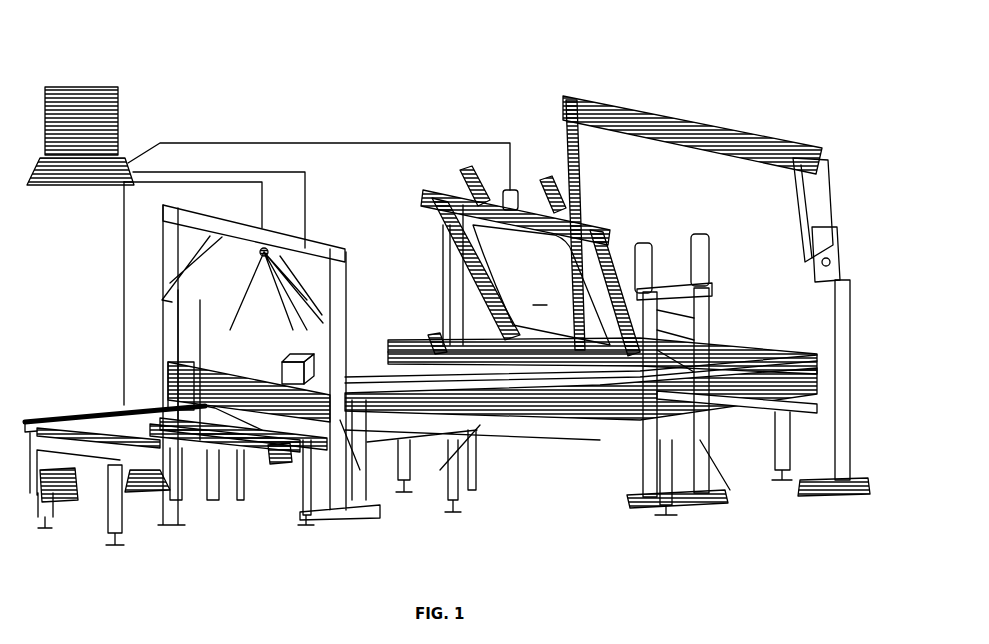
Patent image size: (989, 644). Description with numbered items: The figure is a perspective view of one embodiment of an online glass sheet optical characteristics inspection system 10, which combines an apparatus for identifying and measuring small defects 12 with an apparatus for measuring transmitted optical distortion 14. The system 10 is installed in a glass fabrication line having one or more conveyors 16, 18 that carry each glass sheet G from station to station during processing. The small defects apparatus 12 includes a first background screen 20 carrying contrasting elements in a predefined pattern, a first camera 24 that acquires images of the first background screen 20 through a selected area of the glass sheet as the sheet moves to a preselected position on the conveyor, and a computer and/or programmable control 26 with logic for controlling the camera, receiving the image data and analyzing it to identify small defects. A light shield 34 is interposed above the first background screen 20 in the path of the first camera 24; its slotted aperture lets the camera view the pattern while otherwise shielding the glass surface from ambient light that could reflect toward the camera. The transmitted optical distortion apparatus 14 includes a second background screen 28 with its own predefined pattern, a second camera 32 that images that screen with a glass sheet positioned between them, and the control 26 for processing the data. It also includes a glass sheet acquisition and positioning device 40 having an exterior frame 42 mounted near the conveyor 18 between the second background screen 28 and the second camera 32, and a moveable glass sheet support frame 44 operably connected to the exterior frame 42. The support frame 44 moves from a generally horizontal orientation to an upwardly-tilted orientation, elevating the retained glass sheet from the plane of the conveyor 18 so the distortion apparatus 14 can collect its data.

The online glass sheet optical characteristics inspection system 10 is at (238, 92).
The apparatus for identifying and measuring small defects 12 is at (322, 232).
The apparatus for measuring transmitted optical distortion 14 is at (524, 150).
The conveyor 16 is at (92, 410).
The conveyor 18 is at (382, 368).
The first background screen 20 is at (306, 464).
The first camera 24 is at (262, 256).
The computer and/or programmable control 26 is at (75, 86).
The second background screen 28 is at (742, 126).
The second camera 32 is at (297, 360).
The light shield 34 is at (190, 362).
The glass sheet acquisition and positioning device 40 is at (434, 267).
The exterior frame 42 is at (720, 320).
The moveable glass sheet support frame 44 is at (448, 186).